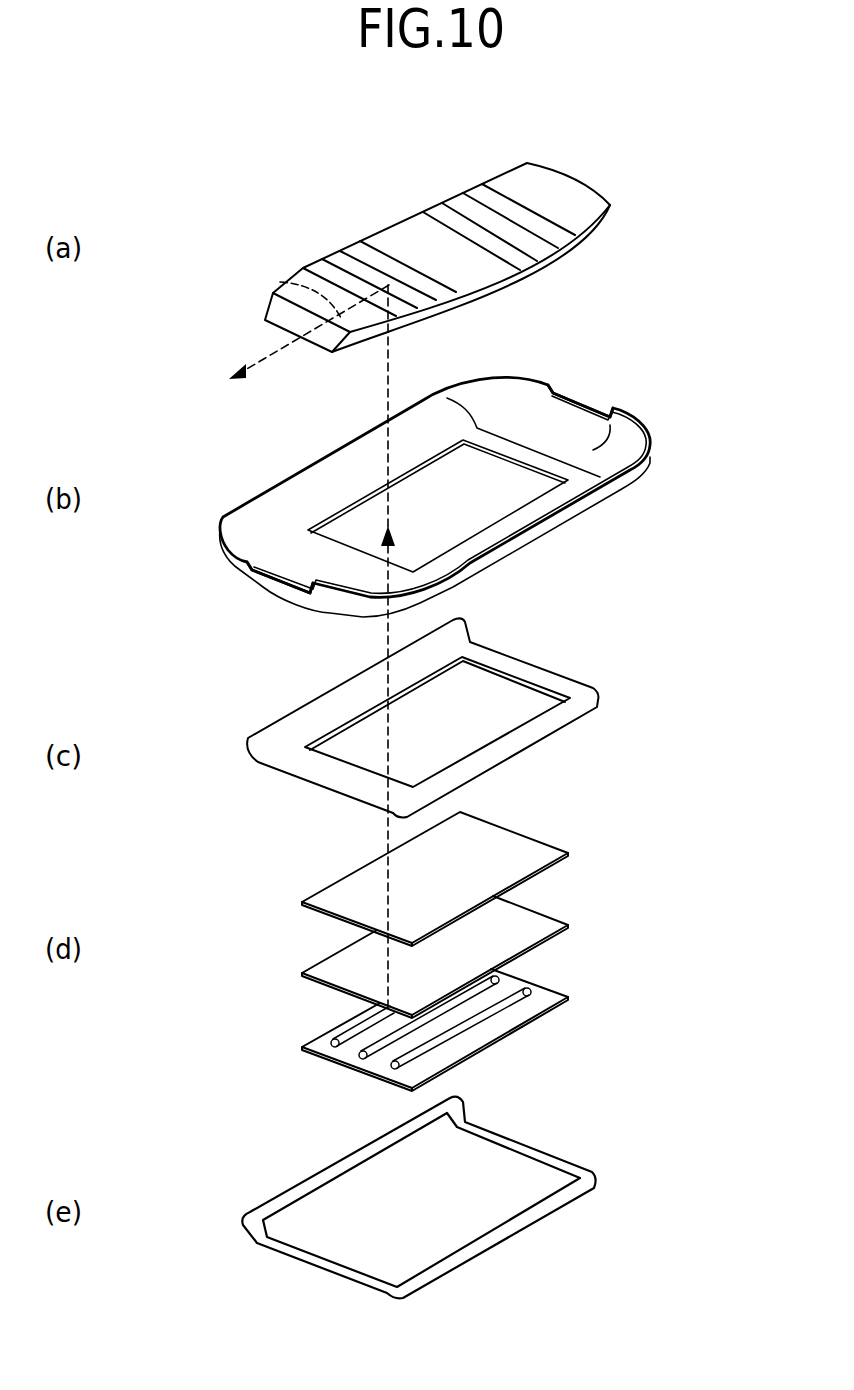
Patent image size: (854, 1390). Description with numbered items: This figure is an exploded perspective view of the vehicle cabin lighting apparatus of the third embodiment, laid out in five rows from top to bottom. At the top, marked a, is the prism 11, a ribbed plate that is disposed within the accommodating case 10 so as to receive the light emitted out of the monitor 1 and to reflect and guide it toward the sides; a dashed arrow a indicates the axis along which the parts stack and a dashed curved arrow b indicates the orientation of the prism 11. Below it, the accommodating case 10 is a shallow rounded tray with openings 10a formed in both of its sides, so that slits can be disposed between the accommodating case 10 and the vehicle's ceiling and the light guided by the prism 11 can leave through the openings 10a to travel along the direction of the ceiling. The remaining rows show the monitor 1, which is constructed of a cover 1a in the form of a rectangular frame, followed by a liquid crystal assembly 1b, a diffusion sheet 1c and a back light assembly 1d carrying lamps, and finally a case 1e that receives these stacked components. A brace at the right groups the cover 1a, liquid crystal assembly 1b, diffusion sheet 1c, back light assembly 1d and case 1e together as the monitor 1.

The monitor 1 is at (694, 591).
The cover 1a is at (548, 668).
The liquid crystal assembly 1b is at (530, 833).
The diffusion sheet 1c is at (543, 908).
The back light assembly 1d is at (540, 987).
The case 1e is at (540, 1147).
The accommodating case 10 is at (605, 505).
The openings 10a is at (577, 393).
The prism 11 is at (565, 247).
The axis a is at (389, 352).
The rotation direction b is at (280, 282).